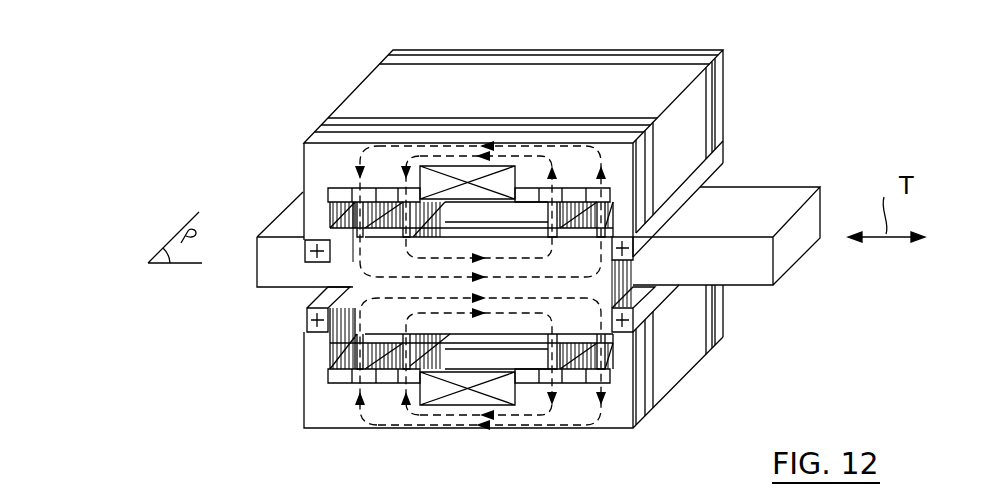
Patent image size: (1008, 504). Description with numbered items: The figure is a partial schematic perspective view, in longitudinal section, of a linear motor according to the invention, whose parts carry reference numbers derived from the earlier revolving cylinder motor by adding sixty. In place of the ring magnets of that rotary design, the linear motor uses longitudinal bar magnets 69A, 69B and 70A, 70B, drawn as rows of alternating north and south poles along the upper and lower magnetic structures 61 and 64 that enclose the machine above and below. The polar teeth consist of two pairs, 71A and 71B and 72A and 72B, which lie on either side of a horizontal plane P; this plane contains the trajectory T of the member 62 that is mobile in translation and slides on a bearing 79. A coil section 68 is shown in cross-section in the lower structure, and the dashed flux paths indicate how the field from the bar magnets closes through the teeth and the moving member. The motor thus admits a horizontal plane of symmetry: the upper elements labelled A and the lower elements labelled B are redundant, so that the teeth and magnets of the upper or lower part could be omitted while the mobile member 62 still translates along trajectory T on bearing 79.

The yoke 61 is at (725, 72).
The member mobile in translation 62 is at (823, 189).
The lower yoke (magnetic core) 64 is at (406, 429).
The coil winding 68 is at (460, 405).
The longitudinal bar magnet 69A is at (575, 188).
The longitudinal bar magnet 69B is at (580, 385).
The longitudinal bar magnet 70A is at (343, 188).
The longitudinal bar magnet 70B is at (354, 372).
The polar tooth 71A is at (353, 224).
The polar tooth 71B is at (378, 390).
The polar tooth 72A is at (585, 228).
The polar tooth 72B is at (565, 350).
The bearing 79 is at (306, 321).